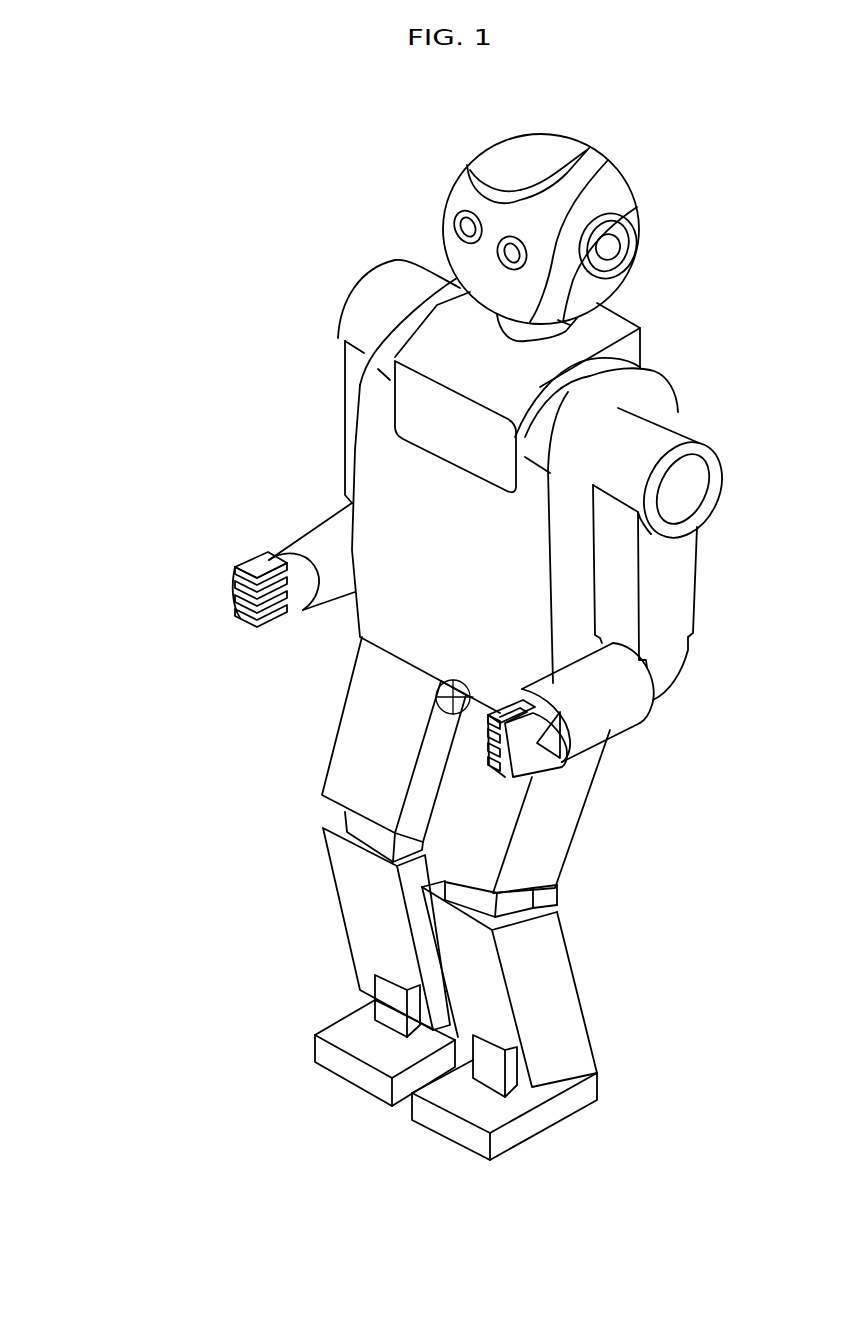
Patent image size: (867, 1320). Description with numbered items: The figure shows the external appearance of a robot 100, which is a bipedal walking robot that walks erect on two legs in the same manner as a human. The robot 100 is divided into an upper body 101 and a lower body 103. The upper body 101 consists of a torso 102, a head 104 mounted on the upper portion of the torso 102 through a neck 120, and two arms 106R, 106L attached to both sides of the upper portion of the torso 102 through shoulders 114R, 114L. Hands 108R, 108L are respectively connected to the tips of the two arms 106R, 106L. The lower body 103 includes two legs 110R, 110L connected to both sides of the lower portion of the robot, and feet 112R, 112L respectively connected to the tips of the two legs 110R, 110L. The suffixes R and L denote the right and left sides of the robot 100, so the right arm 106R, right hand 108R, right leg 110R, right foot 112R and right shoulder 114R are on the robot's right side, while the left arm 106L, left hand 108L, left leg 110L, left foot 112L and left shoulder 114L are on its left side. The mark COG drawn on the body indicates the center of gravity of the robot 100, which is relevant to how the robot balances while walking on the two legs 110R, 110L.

The robot 100 is at (444, 94).
The upper body 101 is at (245, 365).
The torso 102 is at (390, 477).
The lower body 103 is at (290, 813).
The head 104 is at (455, 195).
The right arm 106R is at (297, 543).
The left arm 106L is at (683, 653).
The right hand 108R is at (232, 590).
The left hand 108L is at (533, 757).
The right leg 110R is at (350, 912).
The left leg 110L is at (563, 983).
The right foot 112R is at (322, 1053).
The left foot 112L is at (538, 1118).
The right shoulder 114R is at (363, 292).
The left shoulder 114L is at (680, 432).
The neck 120 is at (567, 327).
The center of gravity COG is at (437, 690).